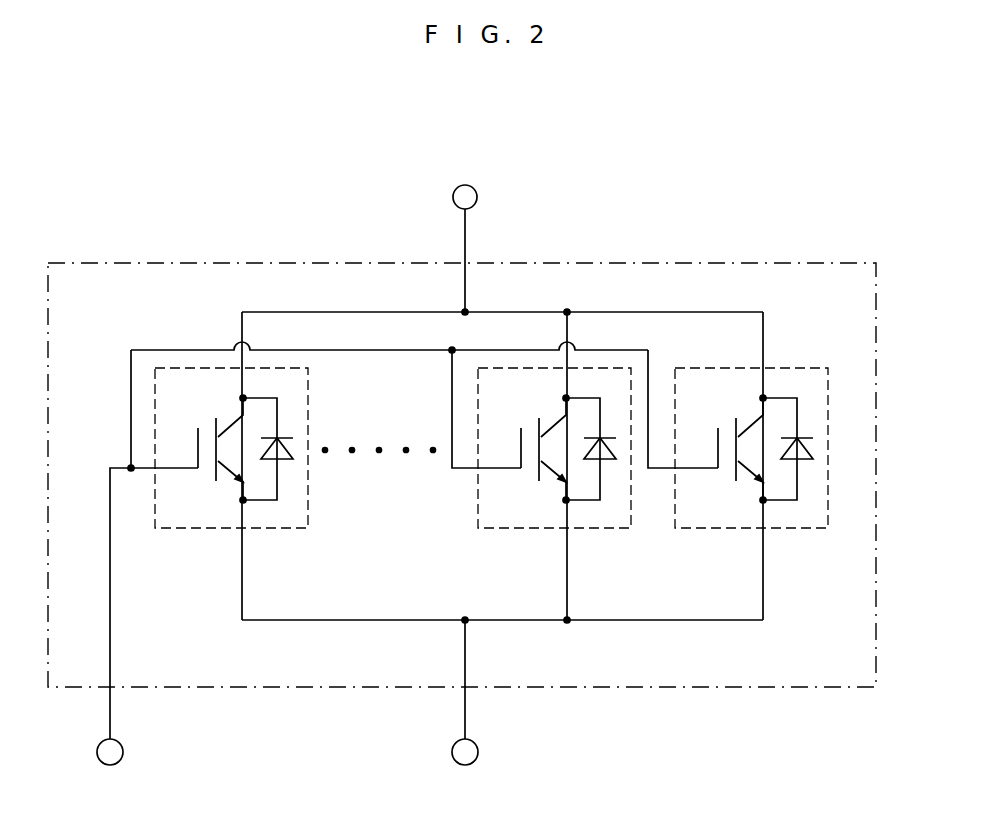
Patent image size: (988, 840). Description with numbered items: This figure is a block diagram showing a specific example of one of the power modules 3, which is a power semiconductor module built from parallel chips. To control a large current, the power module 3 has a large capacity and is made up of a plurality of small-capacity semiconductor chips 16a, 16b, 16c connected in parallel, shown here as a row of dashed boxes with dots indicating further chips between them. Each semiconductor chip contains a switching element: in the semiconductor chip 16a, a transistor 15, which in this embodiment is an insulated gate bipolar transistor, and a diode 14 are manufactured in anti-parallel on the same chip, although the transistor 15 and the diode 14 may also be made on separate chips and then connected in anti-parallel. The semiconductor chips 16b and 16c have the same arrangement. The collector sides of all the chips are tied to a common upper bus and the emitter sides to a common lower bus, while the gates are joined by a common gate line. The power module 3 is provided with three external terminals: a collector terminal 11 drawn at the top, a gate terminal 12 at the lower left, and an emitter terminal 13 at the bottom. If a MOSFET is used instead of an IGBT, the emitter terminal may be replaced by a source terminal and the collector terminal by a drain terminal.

The power module 3 is at (91, 263).
The collector terminal 11 is at (477, 193).
The gate terminal 12 is at (123, 757).
The emitter terminal 13 is at (478, 757).
The diode 14 is at (803, 428).
The transistor 15 is at (705, 472).
The semiconductor chip 16a is at (799, 400).
The semiconductor chip 16b is at (600, 368).
The semiconductor chip 16c is at (185, 368).